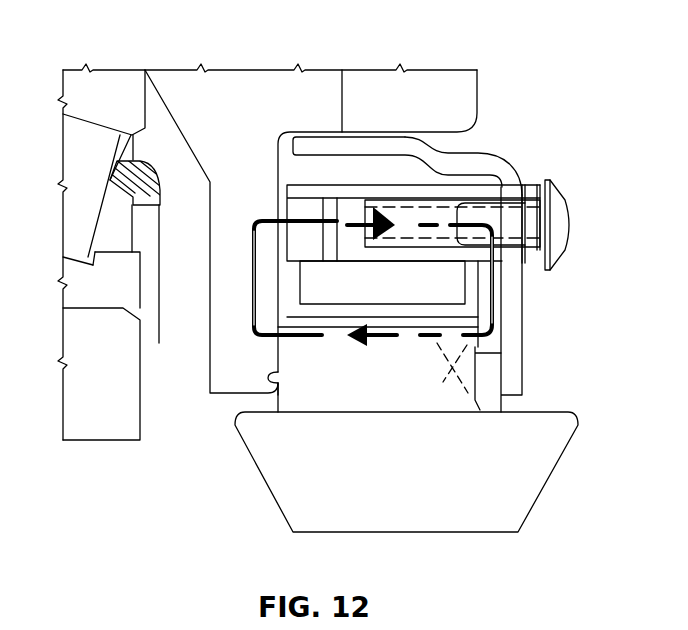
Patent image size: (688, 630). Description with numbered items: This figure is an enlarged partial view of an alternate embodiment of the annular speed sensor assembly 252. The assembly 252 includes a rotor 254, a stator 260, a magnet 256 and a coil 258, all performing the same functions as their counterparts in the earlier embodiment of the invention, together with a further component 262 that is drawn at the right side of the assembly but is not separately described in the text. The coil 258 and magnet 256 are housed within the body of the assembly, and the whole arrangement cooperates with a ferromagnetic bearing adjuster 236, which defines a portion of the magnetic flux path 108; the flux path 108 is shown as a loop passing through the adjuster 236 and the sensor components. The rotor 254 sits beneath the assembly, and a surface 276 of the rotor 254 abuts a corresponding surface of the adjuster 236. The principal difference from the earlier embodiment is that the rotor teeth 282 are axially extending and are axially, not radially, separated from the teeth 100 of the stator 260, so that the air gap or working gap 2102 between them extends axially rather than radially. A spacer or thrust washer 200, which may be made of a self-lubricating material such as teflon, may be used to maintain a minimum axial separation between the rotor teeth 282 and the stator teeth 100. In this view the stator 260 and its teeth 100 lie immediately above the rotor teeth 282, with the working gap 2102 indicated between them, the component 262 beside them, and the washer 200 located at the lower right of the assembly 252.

The ferromagnetic bearing adjuster 236 is at (228, 80).
The annular speed sensor assembly 252 is at (578, 184).
The magnet 256 is at (431, 207).
The coil 258 is at (446, 282).
The valve body 262 is at (513, 307).
The stator 260 is at (485, 335).
The stator teeth 100 is at (493, 347).
The rotor teeth 282 is at (467, 367).
The spacer or thrust washer 200 is at (488, 396).
The flux path 108 is at (246, 336).
The surface of rotor 276 is at (278, 387).
The air gap or working gap 2102 is at (434, 373).
The rotor 254 is at (406, 472).